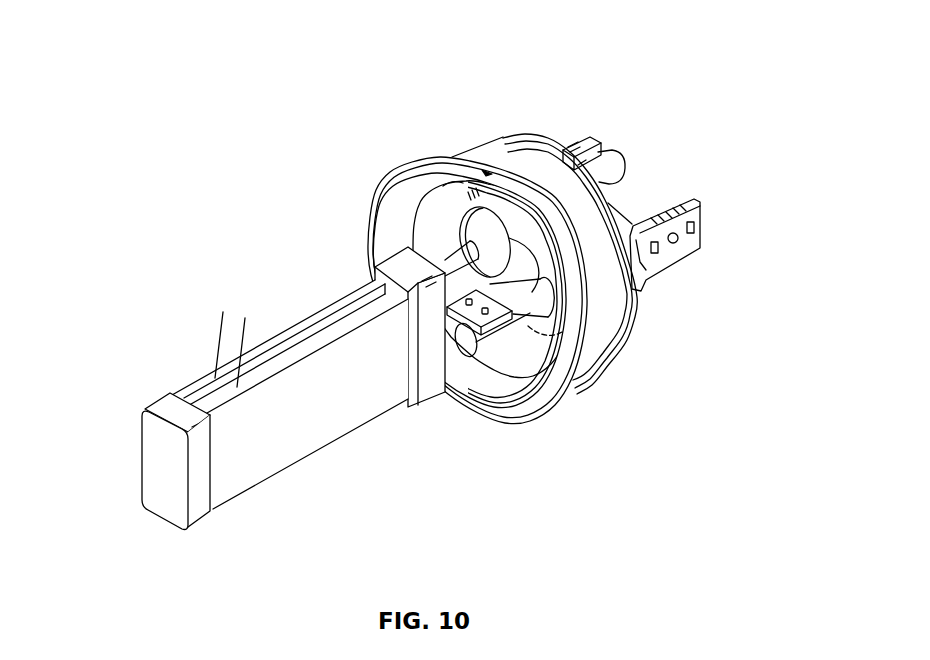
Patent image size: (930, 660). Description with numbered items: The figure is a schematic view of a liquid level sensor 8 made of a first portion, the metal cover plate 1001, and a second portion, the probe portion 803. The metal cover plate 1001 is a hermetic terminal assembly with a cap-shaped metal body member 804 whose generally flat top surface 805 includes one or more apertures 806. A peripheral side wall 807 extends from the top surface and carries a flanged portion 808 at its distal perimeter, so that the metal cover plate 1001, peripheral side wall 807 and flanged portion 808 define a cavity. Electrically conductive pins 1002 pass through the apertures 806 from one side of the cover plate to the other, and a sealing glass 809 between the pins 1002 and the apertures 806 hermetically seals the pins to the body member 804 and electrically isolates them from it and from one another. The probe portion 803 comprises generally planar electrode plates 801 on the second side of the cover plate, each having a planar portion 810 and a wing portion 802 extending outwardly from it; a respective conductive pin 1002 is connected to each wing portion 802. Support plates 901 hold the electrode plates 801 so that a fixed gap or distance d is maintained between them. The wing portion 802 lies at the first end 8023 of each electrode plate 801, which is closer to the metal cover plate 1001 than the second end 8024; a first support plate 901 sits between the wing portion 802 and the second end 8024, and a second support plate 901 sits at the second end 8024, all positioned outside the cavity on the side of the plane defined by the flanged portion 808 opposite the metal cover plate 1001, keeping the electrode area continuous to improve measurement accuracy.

The liquid level sensor 8 is at (132, 164).
The metal cover plate 1001 is at (503, 138).
The peripheral side wall 807 is at (614, 335).
The flanged portion 808 is at (458, 168).
The first end 8023 is at (489, 398).
The sealing glass 809 is at (467, 225).
The conductive pin 1002 is at (446, 243).
The aperture 806 is at (557, 334).
The wing portion 802 is at (487, 337).
The cap-shaped metal body member 804 is at (609, 117).
The top surface 805 is at (607, 201).
The planar portion 810 is at (339, 410).
The electrode plate 801 is at (252, 488).
The probe portion 803 is at (266, 298).
The gap or distance d is at (292, 377).
The support plate 901 is at (157, 397).
The second end 8024 is at (138, 531).